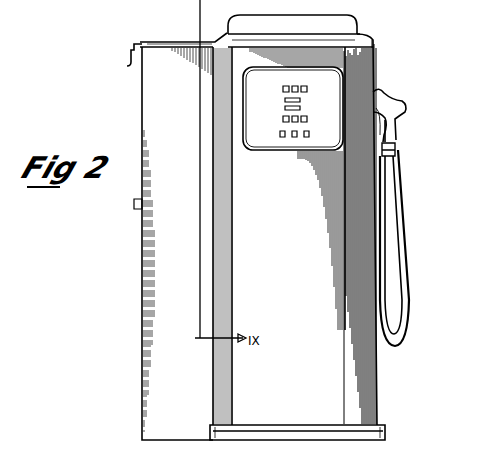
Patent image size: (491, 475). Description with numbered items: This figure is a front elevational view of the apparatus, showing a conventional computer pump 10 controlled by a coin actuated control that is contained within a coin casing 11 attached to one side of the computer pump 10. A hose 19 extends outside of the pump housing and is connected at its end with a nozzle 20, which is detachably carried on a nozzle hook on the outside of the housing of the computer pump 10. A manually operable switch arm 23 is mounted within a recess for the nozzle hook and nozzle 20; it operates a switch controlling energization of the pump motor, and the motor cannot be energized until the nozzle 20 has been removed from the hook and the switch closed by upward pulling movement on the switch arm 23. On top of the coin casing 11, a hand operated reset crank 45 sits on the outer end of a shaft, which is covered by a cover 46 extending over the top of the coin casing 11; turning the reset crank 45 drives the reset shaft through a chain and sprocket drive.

The computer pump 10 is at (367, 368).
The coin casing 11 is at (148, 333).
The hose 19 is at (393, 180).
The nozzle 20 is at (377, 91).
The switch arm 23 is at (381, 128).
The reset crank 45 is at (131, 66).
The cover 46 is at (172, 42).